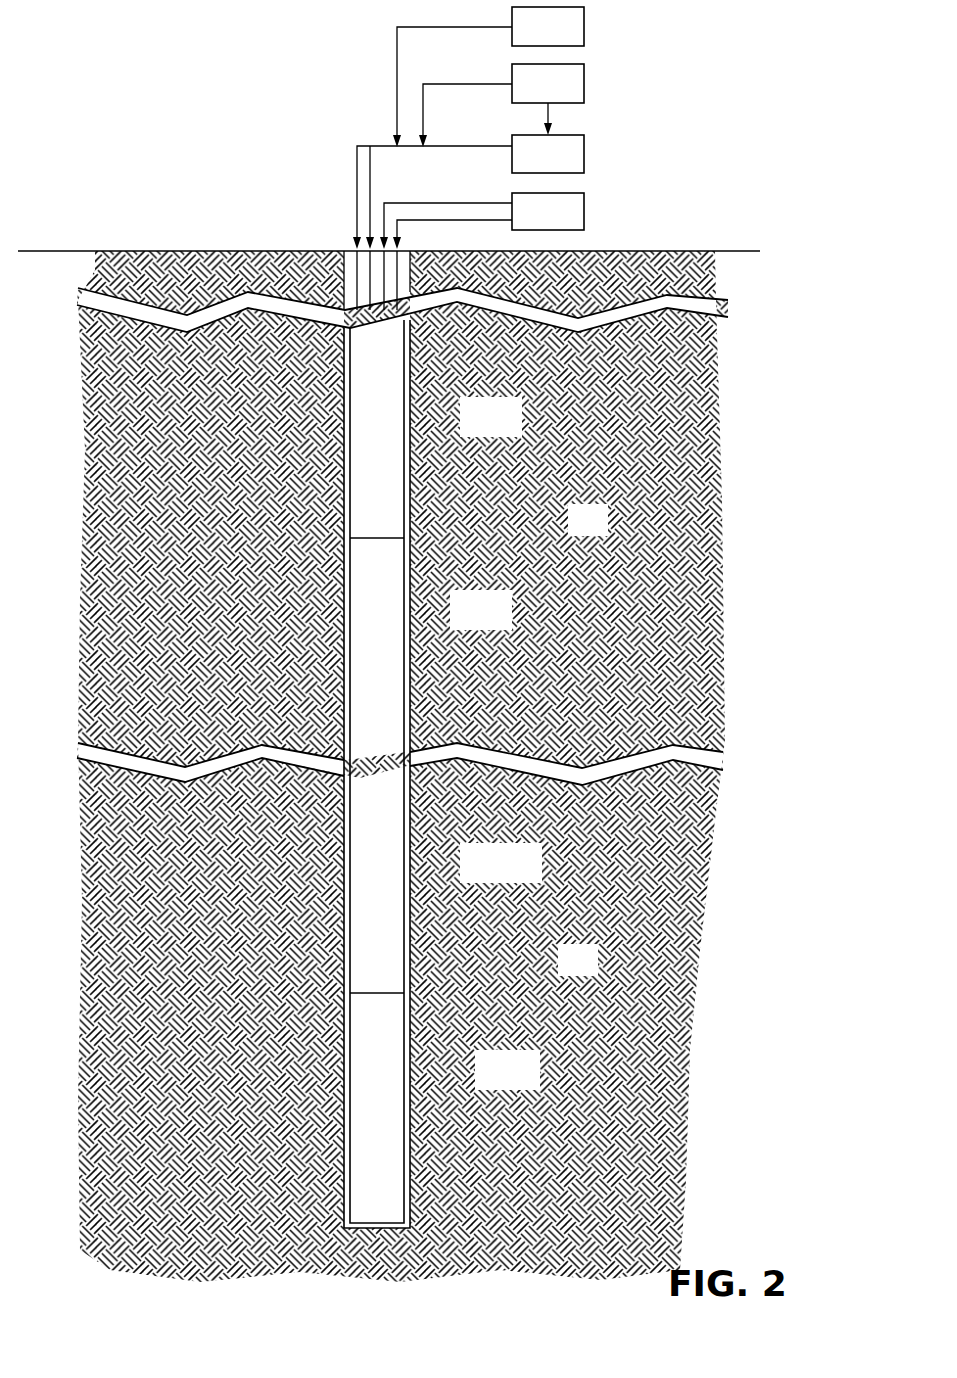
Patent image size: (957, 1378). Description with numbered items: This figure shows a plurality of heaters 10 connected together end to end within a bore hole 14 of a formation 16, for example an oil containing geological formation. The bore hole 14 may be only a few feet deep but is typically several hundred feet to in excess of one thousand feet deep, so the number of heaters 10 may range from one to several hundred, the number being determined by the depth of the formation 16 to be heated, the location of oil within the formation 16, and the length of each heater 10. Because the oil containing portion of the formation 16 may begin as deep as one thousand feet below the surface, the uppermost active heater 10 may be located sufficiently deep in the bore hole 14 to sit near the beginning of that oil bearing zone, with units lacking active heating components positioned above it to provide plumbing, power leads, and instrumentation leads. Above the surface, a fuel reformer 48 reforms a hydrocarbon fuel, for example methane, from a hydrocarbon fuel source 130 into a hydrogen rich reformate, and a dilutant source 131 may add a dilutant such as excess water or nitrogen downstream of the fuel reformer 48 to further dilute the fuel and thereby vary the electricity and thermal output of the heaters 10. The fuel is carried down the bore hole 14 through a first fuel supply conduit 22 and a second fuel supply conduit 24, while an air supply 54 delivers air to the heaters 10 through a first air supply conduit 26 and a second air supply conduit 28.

The heater 10 is at (387, 435).
The bore hole 14 is at (347, 377).
The formation 16 is at (402, 766).
The first fuel supply conduit 22 is at (357, 200).
The second fuel supply conduit 24 is at (370, 192).
The first air supply conduit 26 is at (479, 203).
The second air supply conduit 28 is at (490, 221).
The fuel reformer 48 is at (548, 154).
The air supply 54 is at (548, 211).
The hydrocarbon fuel source 130 is at (501, 105).
The dilutant source 131 is at (488, 77).